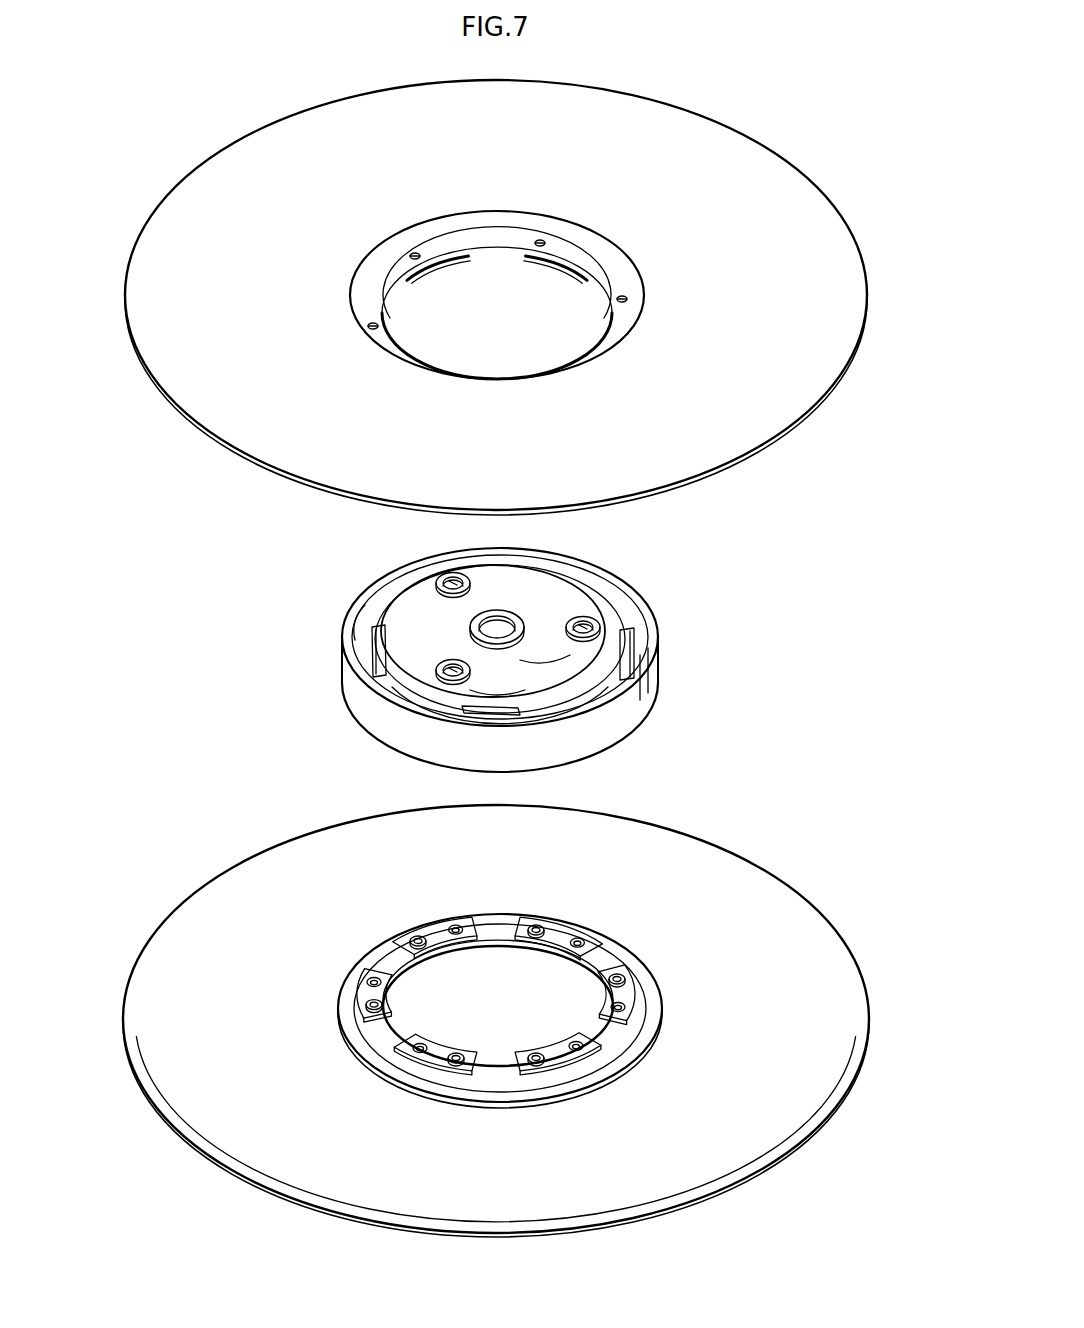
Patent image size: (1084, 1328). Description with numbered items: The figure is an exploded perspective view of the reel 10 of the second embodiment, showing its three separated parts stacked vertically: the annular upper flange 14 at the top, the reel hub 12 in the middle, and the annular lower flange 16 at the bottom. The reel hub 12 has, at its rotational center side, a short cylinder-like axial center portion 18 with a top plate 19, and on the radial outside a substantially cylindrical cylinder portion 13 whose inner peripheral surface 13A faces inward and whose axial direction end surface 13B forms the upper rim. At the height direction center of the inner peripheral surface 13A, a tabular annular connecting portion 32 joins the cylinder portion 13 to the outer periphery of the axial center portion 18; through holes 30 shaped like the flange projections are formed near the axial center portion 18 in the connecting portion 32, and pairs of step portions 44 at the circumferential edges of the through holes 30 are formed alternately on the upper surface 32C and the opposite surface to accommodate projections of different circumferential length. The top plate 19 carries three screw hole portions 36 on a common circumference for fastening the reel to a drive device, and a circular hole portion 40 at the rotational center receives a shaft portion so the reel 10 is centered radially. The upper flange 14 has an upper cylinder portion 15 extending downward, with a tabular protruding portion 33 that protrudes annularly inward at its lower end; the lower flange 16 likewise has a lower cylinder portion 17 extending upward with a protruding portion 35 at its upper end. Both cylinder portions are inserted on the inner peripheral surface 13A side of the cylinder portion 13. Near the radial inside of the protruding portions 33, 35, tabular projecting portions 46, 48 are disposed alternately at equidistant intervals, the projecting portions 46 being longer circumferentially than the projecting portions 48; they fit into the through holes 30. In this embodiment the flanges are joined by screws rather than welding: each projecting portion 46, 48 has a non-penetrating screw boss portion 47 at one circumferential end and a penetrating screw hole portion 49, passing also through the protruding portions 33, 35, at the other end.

The reel 10 is at (785, 120).
The reel hub 12 is at (660, 655).
The cylinder portion 13 is at (614, 729).
The inner peripheral surface 13A is at (497, 552).
The axial direction end surface 13B is at (346, 635).
The upper flange 14 is at (838, 196).
The upper cylinder portion 15 is at (490, 221).
The lower flange 16 is at (814, 898).
The lower cylinder portion 17 is at (628, 1035).
The axial center portion 18 is at (549, 670).
The top plate 19 is at (497, 682).
The through holes 30 is at (641, 641).
The connecting portion 32 is at (382, 600).
The upper surface 32C is at (352, 648).
The protruding portion 33 is at (606, 268).
The protruding portion 35 is at (385, 1033).
The screw hole portions 36 is at (450, 580).
The hole portion 40 is at (513, 619).
The step portions 44 is at (372, 627).
The projecting portions 46 is at (553, 264).
The screw boss portions 47 is at (538, 926).
The projecting portions 48 is at (438, 262).
The screw hole portions 49 is at (415, 253).